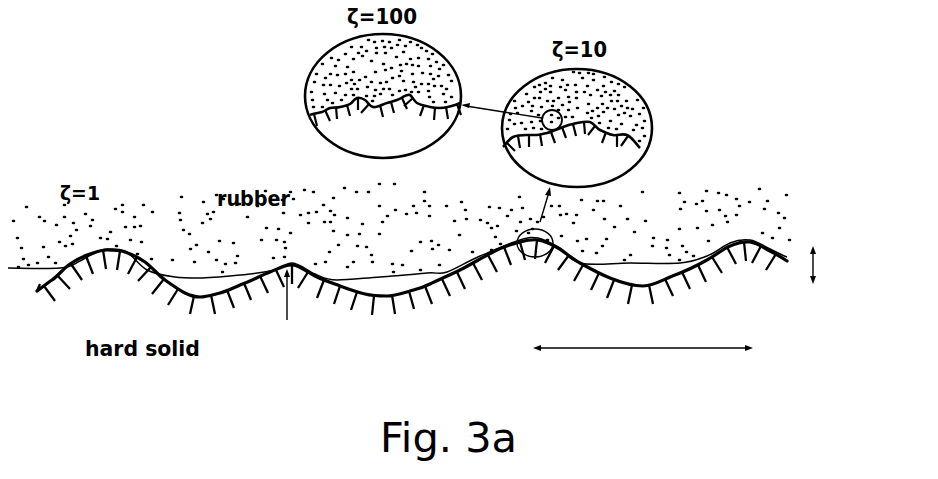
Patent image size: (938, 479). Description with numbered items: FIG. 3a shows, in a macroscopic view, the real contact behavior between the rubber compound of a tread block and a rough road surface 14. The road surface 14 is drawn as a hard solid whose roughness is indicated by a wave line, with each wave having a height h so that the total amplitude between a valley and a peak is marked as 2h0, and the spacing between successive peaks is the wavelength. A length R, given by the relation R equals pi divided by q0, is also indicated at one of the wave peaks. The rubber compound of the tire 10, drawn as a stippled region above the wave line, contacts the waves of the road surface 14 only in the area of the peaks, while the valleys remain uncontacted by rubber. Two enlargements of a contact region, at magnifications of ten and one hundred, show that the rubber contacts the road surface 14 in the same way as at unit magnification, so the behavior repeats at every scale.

The tire 10 is at (667, 262).
The road surface 14 is at (426, 287).
The radius of curvature R is at (298, 297).
The peak-to-peak wave height 2h0 is at (839, 269).